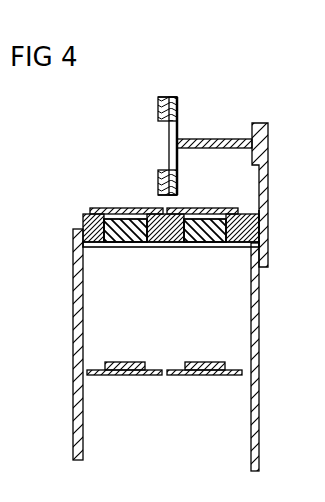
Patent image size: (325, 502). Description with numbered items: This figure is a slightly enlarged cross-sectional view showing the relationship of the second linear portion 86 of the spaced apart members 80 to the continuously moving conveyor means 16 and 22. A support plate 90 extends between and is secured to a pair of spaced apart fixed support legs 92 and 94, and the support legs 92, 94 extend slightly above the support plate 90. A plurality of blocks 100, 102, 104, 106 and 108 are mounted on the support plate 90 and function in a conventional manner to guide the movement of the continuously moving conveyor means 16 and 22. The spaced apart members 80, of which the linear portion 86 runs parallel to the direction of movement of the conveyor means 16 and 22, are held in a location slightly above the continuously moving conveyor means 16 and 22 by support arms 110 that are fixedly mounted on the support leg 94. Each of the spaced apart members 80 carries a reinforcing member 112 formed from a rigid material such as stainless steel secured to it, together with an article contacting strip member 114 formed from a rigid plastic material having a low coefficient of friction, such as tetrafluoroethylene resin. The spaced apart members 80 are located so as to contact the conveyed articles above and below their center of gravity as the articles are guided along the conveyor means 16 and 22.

The second linear portion 86 is at (165, 93).
The spaced apart members 80 is at (178, 107).
The reinforcing member 112 is at (167, 93).
The article contacting strip member 114 is at (158, 108).
The support arms 110 is at (232, 139).
The block 108 is at (258, 222).
The continuously moving conveyor means 22 is at (118, 208).
The continuously moving conveyor means 16 is at (205, 208).
The block 100 is at (93, 248).
The block 102 is at (132, 248).
The block 104 is at (175, 248).
The block 106 is at (221, 248).
The support plate 90 is at (176, 250).
The fixed support leg 92 is at (73, 428).
The fixed support leg 94 is at (260, 323).